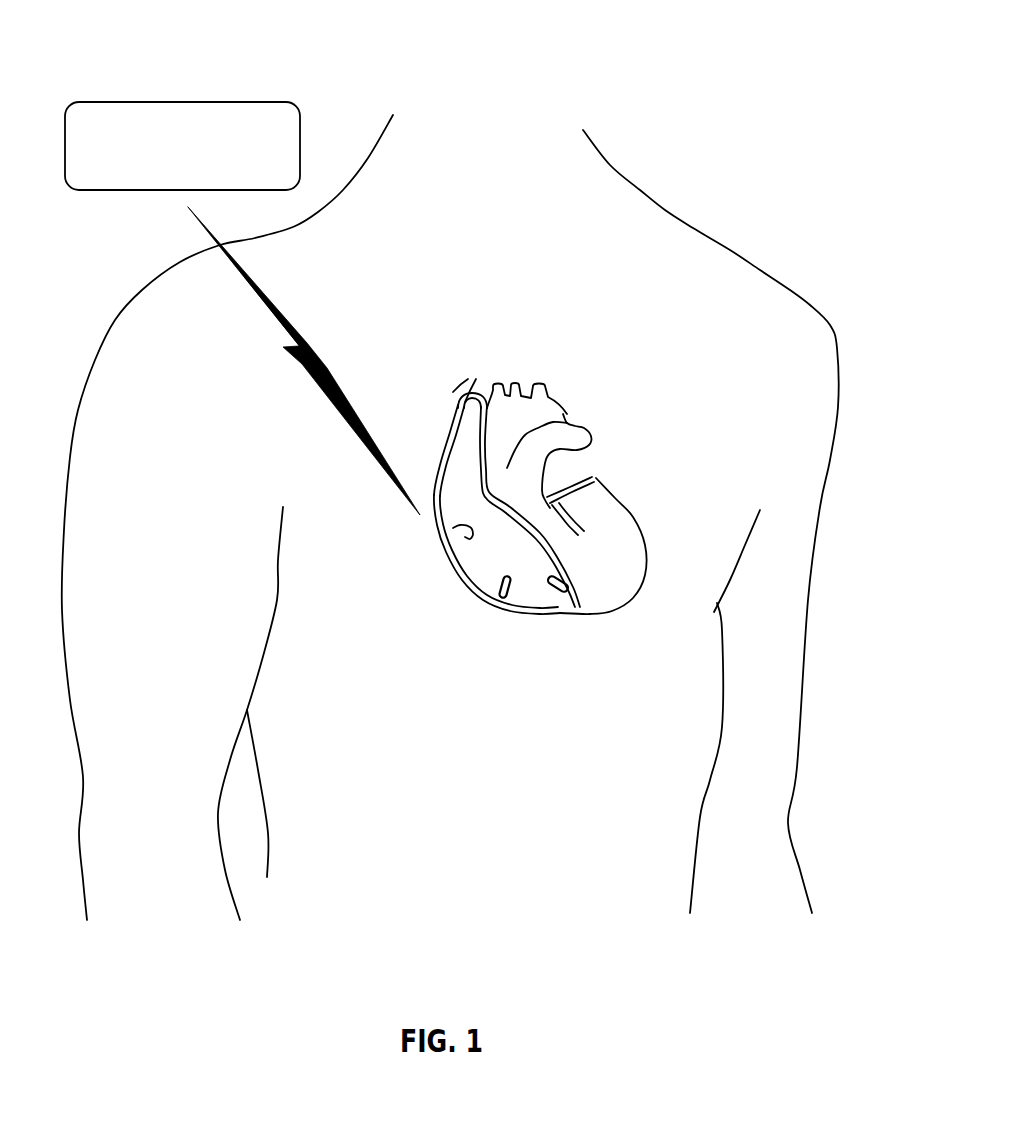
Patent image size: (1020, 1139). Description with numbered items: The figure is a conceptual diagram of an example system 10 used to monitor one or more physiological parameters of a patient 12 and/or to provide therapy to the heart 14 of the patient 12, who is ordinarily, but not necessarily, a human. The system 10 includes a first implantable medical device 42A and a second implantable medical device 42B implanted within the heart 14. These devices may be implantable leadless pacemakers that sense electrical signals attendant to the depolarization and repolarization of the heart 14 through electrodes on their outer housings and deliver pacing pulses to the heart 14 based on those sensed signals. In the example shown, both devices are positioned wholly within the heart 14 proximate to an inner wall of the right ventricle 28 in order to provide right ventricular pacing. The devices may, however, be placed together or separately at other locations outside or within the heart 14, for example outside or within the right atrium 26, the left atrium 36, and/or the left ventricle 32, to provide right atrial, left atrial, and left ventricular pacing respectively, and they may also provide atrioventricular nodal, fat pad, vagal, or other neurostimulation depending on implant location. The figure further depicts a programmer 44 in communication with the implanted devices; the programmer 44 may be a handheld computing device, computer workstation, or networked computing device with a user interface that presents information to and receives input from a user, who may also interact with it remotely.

The system 10 is at (622, 75).
The patient 12 is at (693, 228).
The heart 14 is at (616, 633).
The right atrium 26 is at (455, 477).
The right ventricle 28 is at (470, 550).
The left ventricle 32 is at (596, 478).
The left atrium 36 is at (563, 410).
The first implantable medical device 42A is at (497, 588).
The second implantable medical device 42B is at (557, 589).
The programmer 44 is at (193, 169).